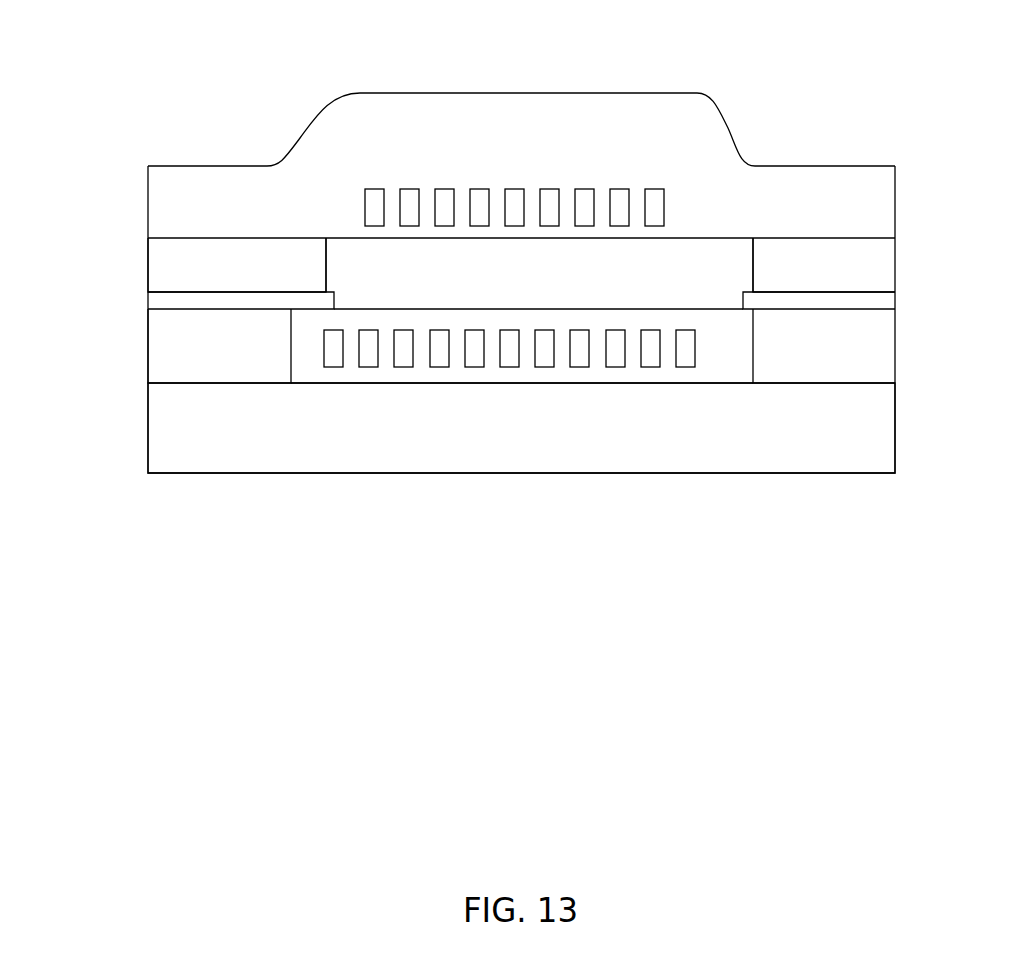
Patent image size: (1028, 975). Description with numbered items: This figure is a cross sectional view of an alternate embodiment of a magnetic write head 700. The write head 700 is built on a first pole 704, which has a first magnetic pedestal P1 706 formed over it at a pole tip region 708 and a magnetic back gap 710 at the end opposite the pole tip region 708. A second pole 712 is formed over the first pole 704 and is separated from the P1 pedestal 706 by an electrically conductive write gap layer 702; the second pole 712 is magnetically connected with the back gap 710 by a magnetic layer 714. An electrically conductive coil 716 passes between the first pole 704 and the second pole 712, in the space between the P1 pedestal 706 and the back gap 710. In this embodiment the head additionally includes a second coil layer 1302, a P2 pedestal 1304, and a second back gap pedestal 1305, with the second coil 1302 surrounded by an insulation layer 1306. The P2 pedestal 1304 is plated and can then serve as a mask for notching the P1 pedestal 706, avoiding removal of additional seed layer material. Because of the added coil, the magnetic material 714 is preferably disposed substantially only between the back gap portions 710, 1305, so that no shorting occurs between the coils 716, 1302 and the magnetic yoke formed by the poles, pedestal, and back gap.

The magnetic write head 700 is at (742, 538).
The write gap layer 702 is at (158, 297).
The first pole 704 is at (353, 428).
The first magnetic pedestal P1 706 is at (167, 343).
The pole tip region 708 is at (170, 411).
The magnetic back gap 710 is at (847, 339).
The second pole 712 is at (352, 130).
The magnetic layer 714 is at (788, 302).
The electrically conductive coil 716 is at (505, 383).
The second coil layer 1302 is at (525, 174).
The P2 pedestal 1304 is at (183, 265).
The second back gap pedestal 1305 is at (877, 262).
The insulation layer 1306 is at (695, 275).